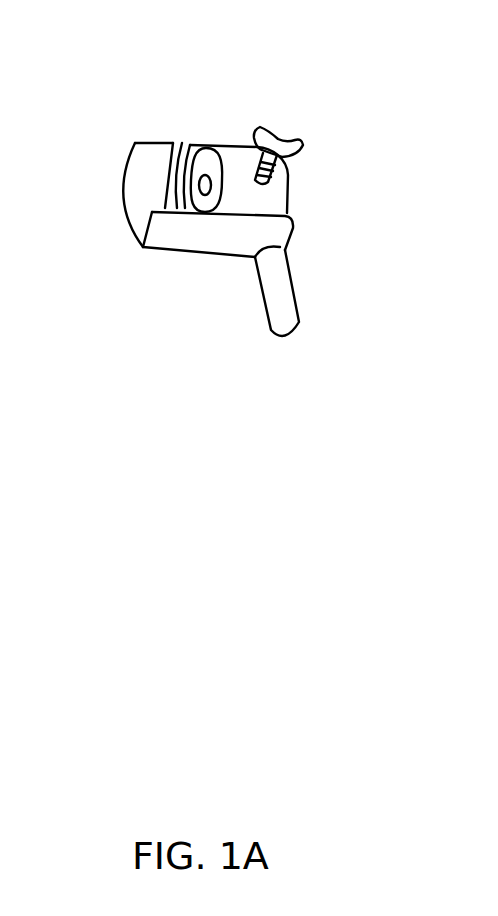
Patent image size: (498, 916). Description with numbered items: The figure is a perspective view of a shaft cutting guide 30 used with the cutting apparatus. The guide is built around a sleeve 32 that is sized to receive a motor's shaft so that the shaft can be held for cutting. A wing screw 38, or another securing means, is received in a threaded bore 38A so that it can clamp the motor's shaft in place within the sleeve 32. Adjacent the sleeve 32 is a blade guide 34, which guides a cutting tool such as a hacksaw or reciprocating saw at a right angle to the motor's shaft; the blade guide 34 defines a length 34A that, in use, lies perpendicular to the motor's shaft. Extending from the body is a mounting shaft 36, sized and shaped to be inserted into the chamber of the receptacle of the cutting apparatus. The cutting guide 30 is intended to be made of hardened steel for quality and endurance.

The shaft cutting guide 30 is at (185, 296).
The sleeve 32 is at (288, 193).
The blade guide 34 is at (177, 143).
The length 34A is at (168, 177).
The mounting shaft 36 is at (290, 283).
The wing screw 38 is at (278, 138).
The threaded bore 38A is at (270, 171).